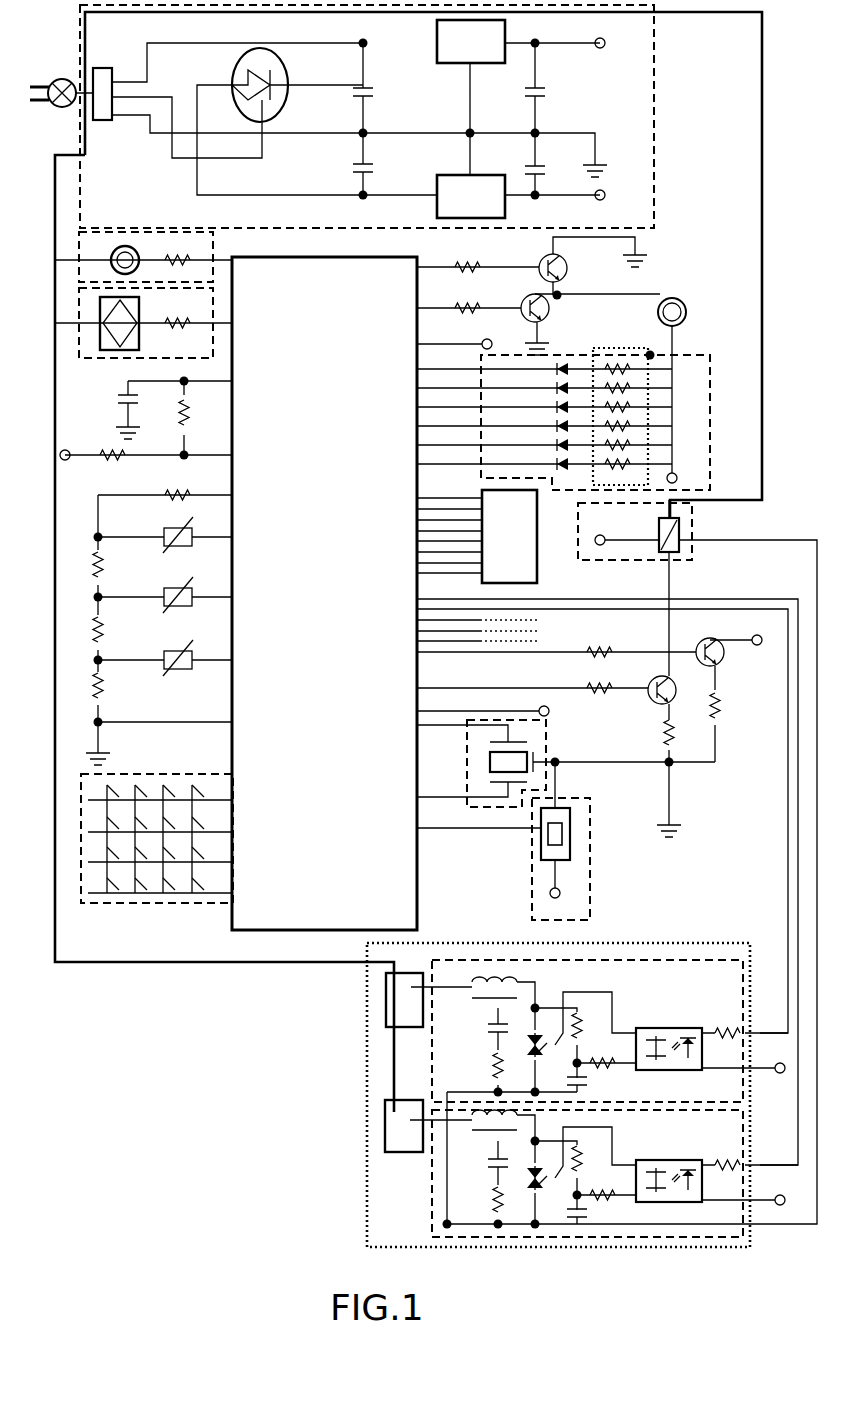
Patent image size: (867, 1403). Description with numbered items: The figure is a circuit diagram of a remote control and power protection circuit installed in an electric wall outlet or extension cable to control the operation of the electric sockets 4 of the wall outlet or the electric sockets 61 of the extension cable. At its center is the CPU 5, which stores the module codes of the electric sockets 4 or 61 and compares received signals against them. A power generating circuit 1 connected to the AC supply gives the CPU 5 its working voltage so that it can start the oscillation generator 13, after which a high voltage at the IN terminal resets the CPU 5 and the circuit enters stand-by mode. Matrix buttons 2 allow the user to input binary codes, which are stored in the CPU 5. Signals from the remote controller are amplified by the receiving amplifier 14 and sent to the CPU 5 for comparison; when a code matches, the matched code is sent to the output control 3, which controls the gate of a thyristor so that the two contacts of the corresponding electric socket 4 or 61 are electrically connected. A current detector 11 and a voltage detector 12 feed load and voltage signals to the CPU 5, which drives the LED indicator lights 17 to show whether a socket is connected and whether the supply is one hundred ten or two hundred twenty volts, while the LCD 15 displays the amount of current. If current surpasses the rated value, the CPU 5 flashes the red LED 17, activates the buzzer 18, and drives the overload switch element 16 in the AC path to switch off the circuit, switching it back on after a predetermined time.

The power generating circuit 1 is at (652, 162).
The matrix buttons 2 is at (165, 902).
The output control 3 is at (702, 960).
The electric sockets 4 is at (366, 1062).
The electric sockets 61 is at (387, 1012).
The CPU 5 is at (402, 882).
The current detector 11 is at (80, 269).
The voltage detector 12 is at (80, 341).
The oscillation generator 13 is at (490, 800).
The receiving amplifier 14 is at (590, 867).
The LCD 15 is at (530, 561).
The overload switch element 16 is at (695, 530).
The LED indicator lights 17 is at (708, 366).
The buzzer 18 is at (684, 302).